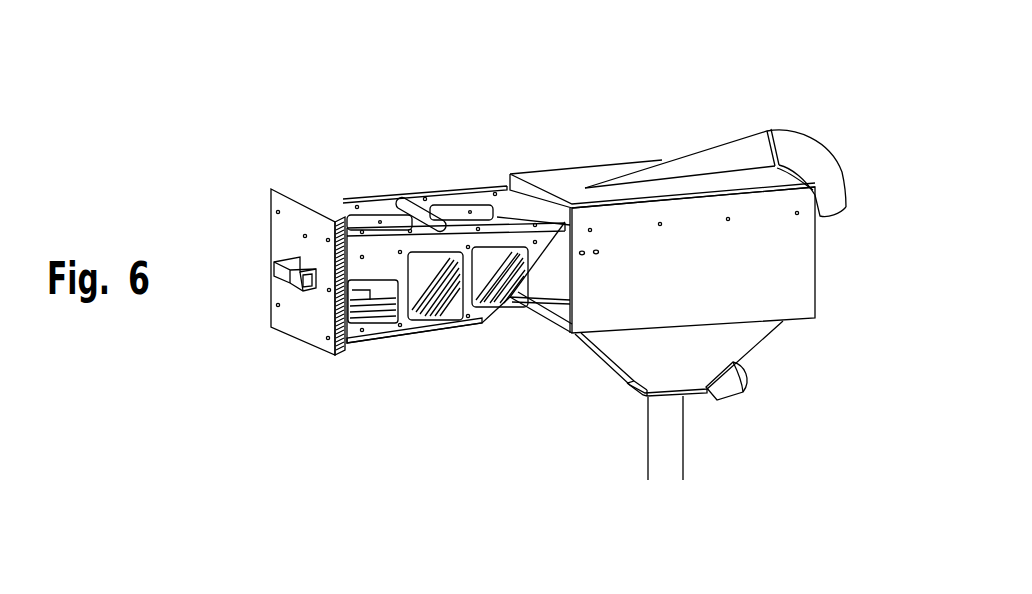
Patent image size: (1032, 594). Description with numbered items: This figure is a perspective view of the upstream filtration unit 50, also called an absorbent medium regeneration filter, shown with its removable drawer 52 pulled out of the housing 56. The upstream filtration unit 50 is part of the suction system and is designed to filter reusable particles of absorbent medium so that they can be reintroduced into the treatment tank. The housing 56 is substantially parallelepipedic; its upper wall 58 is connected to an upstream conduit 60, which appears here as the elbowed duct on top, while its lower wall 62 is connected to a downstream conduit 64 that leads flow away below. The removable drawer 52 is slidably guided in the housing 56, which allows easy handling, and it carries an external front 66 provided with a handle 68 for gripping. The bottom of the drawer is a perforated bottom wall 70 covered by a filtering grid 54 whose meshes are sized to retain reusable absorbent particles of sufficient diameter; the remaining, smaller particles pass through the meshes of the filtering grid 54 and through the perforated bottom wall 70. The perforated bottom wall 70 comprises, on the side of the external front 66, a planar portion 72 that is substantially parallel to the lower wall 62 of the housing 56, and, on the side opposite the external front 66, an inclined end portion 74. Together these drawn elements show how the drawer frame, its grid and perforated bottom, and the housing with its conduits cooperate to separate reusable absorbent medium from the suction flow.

The upstream filtration unit 50 is at (592, 153).
The removable drawer 52 is at (427, 345).
The filtering grid 54 is at (425, 302).
The housing 56 is at (778, 275).
The upper wall 58 is at (548, 175).
The upstream conduit 60 is at (808, 128).
The lower wall 62 is at (538, 323).
The downstream conduit 64 is at (712, 395).
The external front 66 is at (274, 229).
The handle 68 is at (272, 274).
The perforated bottom wall 70 is at (379, 302).
The planar portion 72 is at (395, 324).
The inclined end portion 74 is at (479, 309).